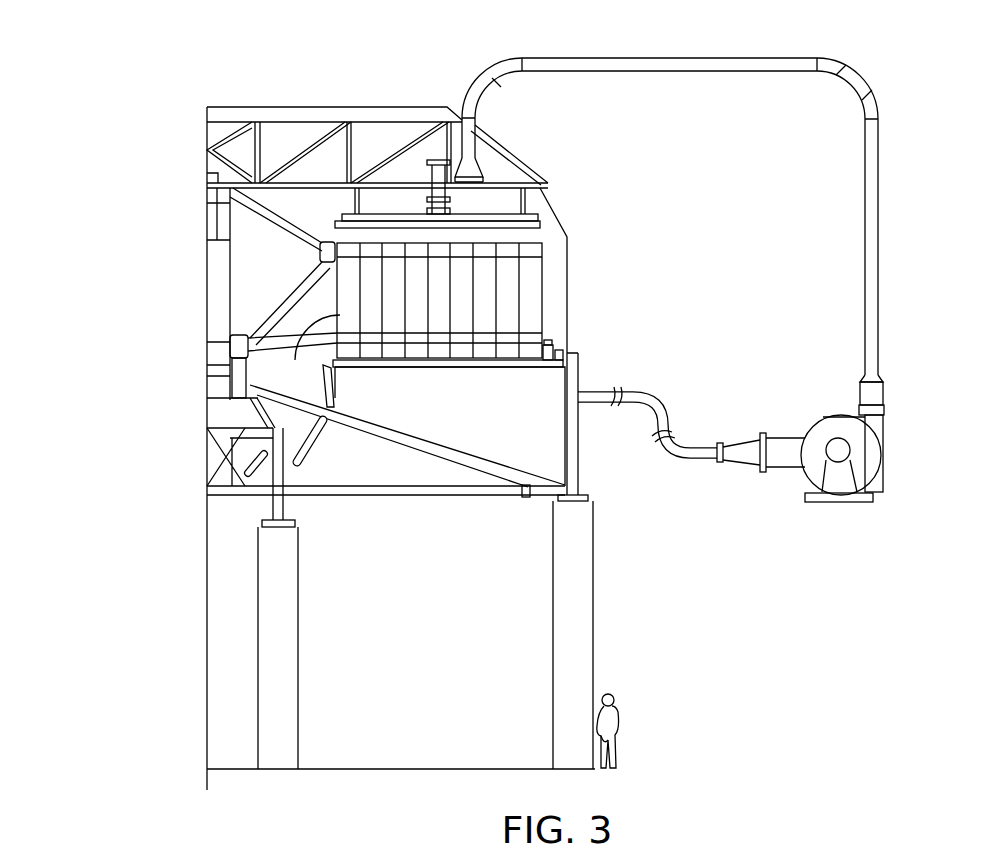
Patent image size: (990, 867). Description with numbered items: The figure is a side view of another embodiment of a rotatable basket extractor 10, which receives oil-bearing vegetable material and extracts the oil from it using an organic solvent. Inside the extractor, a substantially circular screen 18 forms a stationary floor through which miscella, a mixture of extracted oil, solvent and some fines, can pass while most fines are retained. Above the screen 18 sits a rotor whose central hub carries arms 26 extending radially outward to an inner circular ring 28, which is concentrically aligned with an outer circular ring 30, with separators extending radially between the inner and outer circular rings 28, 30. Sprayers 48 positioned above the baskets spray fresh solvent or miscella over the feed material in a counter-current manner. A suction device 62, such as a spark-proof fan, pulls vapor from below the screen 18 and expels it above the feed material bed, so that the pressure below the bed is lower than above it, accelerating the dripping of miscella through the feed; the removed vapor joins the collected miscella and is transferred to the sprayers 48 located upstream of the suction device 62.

The rotatable basket extractor 10 is at (452, 72).
The screen 18 is at (463, 368).
The arms 26 is at (208, 274).
The inner circular ring 28 is at (542, 285).
The outer circular ring 30 is at (312, 361).
The sprayers 48 is at (538, 220).
The suction device 62 is at (876, 455).